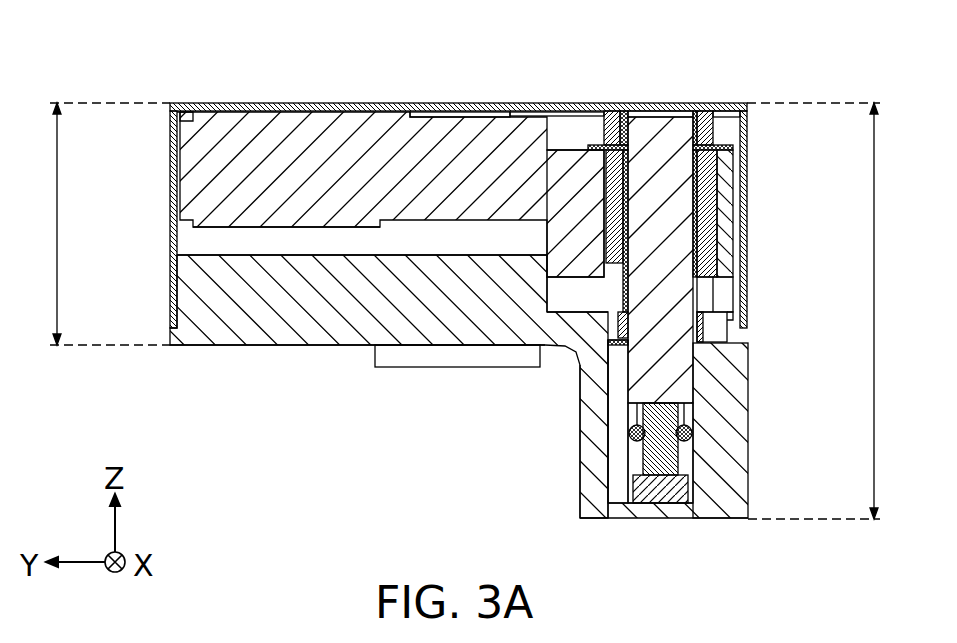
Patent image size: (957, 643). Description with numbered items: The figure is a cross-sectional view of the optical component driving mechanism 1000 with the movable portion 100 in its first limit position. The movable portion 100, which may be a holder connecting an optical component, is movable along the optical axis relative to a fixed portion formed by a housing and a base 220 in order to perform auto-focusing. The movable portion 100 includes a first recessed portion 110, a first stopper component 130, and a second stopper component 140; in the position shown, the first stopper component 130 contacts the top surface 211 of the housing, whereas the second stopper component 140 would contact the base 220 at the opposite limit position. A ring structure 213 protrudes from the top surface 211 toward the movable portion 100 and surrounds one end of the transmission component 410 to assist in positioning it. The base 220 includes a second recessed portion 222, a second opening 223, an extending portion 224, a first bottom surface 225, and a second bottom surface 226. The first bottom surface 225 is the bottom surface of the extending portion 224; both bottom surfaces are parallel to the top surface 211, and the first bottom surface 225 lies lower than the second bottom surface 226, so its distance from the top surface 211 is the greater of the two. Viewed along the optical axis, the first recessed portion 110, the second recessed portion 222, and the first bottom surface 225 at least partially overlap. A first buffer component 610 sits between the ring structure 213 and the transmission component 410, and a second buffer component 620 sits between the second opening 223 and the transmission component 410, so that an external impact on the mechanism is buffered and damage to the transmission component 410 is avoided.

The optical component driving mechanism 1000 is at (105, 38).
The movable portion 100 is at (202, 172).
The first recessed portion 110 is at (575, 187).
The first stopper component 130 is at (233, 104).
The second stopper component 140 is at (216, 241).
The top surface 211 is at (456, 102).
The ring structure 213 is at (713, 130).
The base 220 is at (202, 305).
The second recessed portion 222 is at (583, 330).
The second opening 223 is at (709, 300).
The extending portion 224 is at (589, 447).
The first bottom surface 225 is at (593, 520).
The second bottom surface 226 is at (200, 347).
The transmission component 410 is at (676, 367).
The first buffer component 610 is at (700, 117).
The second buffer component 620 is at (710, 328).